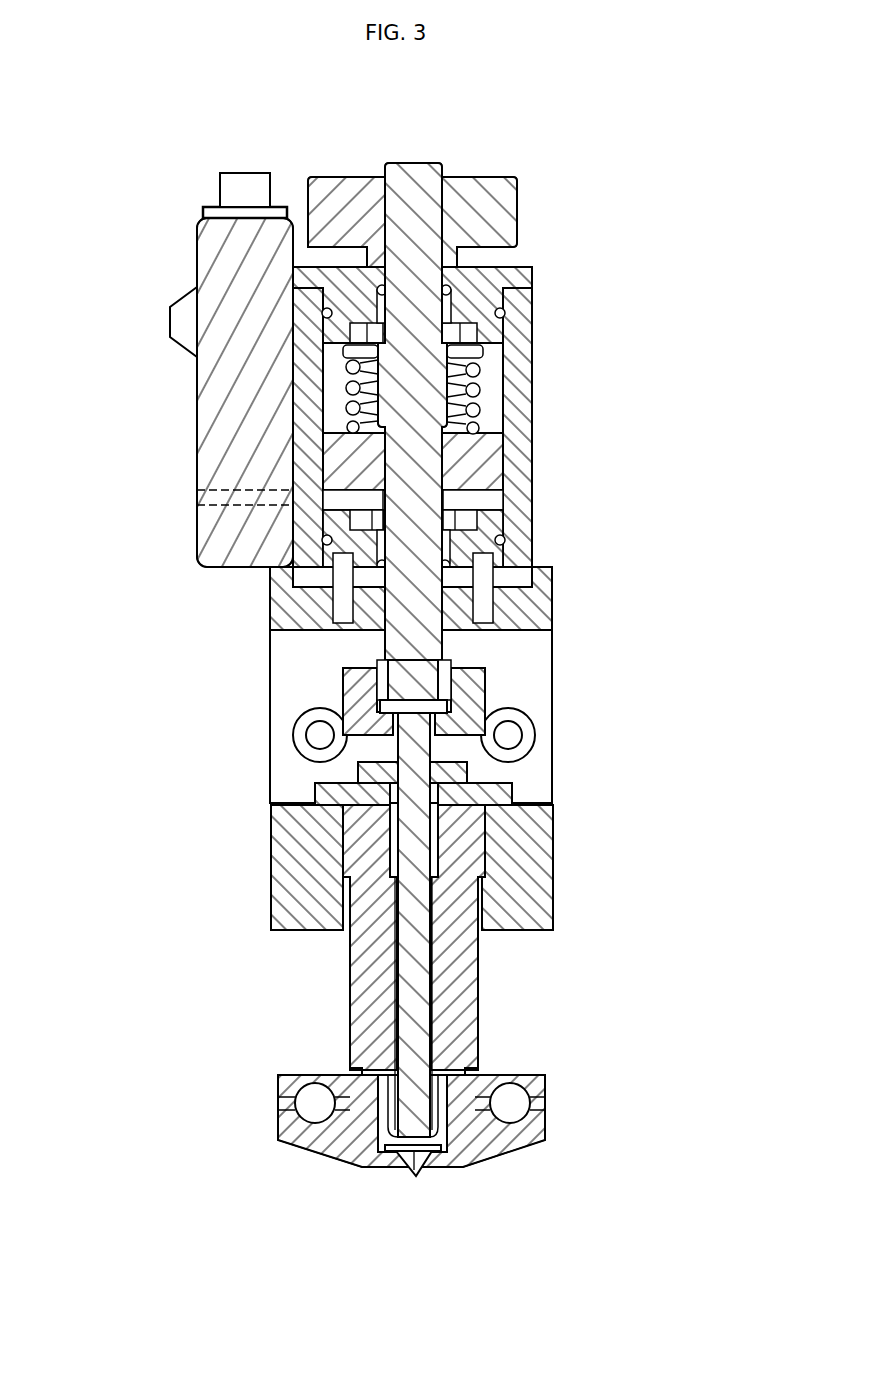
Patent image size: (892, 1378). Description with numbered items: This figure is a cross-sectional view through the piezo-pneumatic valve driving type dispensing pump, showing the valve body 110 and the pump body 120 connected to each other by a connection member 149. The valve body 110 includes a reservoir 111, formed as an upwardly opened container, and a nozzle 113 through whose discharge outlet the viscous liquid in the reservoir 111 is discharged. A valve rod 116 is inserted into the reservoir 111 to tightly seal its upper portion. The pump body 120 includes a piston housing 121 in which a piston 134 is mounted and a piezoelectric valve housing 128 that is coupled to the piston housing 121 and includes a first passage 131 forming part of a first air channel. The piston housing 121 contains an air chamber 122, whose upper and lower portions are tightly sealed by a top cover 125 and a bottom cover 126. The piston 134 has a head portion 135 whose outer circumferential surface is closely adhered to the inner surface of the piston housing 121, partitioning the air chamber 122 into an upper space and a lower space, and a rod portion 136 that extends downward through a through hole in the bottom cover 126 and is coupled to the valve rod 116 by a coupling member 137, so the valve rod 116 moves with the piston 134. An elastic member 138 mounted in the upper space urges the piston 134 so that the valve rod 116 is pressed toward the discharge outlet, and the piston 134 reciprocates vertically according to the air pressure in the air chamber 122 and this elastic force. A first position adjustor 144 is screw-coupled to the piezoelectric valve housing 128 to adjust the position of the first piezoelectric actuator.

The valve body 110 is at (615, 1008).
The reservoir 111 is at (405, 1012).
The nozzle 113 is at (411, 1167).
The valve rod 116 is at (430, 812).
The pump body 120 is at (582, 404).
The piston housing 121 is at (532, 300).
The air chamber 122 is at (498, 390).
The top cover 125 is at (513, 230).
The bottom cover 126 is at (490, 527).
The piezoelectric valve housing 128 is at (200, 228).
The first passage 131 is at (205, 495).
The piston 134 is at (518, 457).
The head portion 135 is at (345, 470).
The rod portion 136 is at (400, 640).
The coupling member 137 is at (345, 688).
The elastic member 138 is at (482, 373).
The first position adjustor 144 is at (243, 178).
The connection member 149 is at (540, 677).